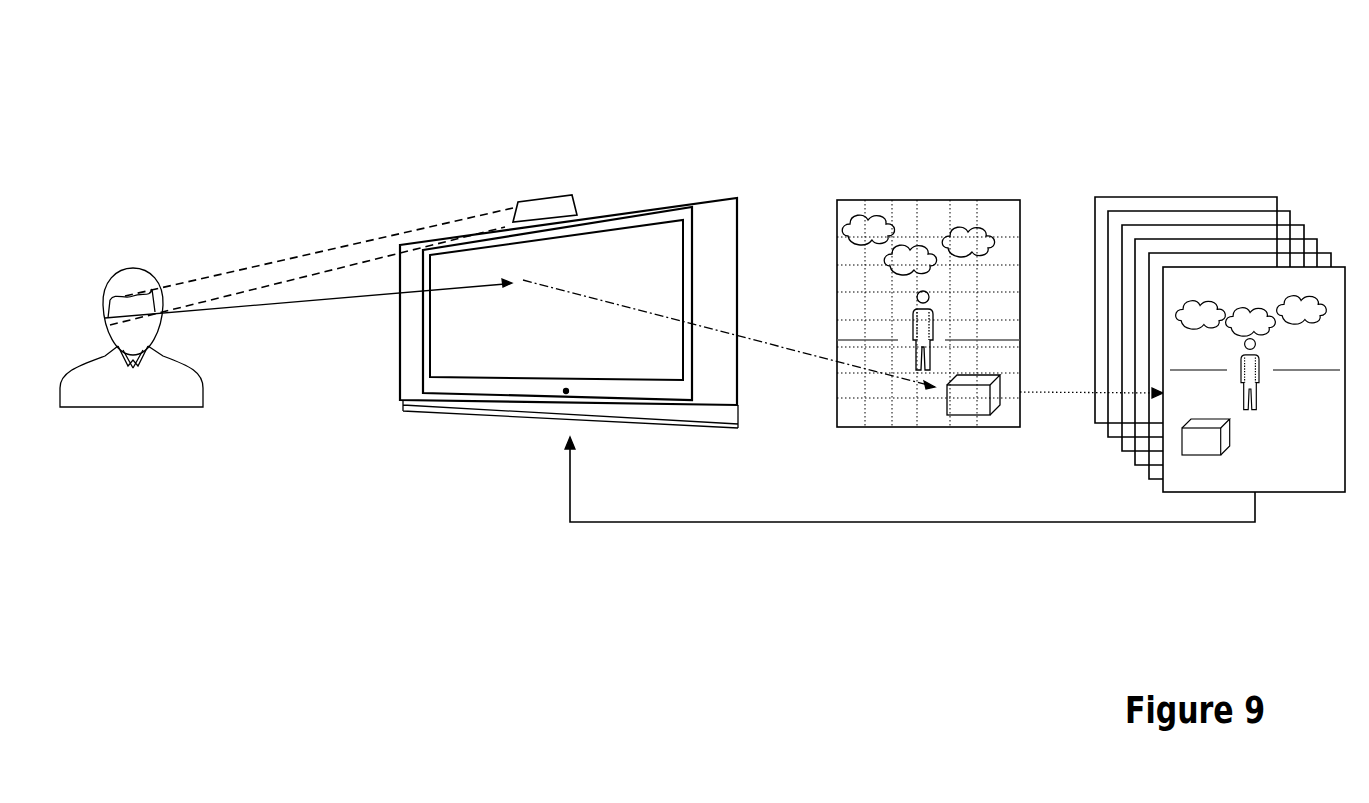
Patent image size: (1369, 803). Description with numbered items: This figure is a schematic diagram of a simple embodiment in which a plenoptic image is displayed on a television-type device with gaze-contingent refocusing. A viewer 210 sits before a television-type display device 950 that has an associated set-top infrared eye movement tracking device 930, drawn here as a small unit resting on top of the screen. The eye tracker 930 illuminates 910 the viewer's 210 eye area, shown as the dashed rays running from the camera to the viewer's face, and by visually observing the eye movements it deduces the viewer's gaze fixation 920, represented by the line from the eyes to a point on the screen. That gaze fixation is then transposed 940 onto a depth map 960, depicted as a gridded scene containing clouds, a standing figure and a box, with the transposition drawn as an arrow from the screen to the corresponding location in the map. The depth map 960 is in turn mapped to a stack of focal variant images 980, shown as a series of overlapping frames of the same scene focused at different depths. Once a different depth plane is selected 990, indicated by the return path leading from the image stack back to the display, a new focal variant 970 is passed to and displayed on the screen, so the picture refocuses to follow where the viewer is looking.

The viewer 210 is at (128, 266).
The illumination 910 is at (245, 278).
The gaze fixation 920 is at (327, 303).
The eye movement tracking device 930 is at (537, 202).
The transposition of gaze fixation 940 is at (620, 305).
The television-type display device 950 is at (705, 200).
The depth map 960 is at (933, 200).
The new focal variant 970 is at (1033, 389).
The stack of focal variant images 980 is at (1190, 197).
The depth plane selection 990 is at (782, 520).